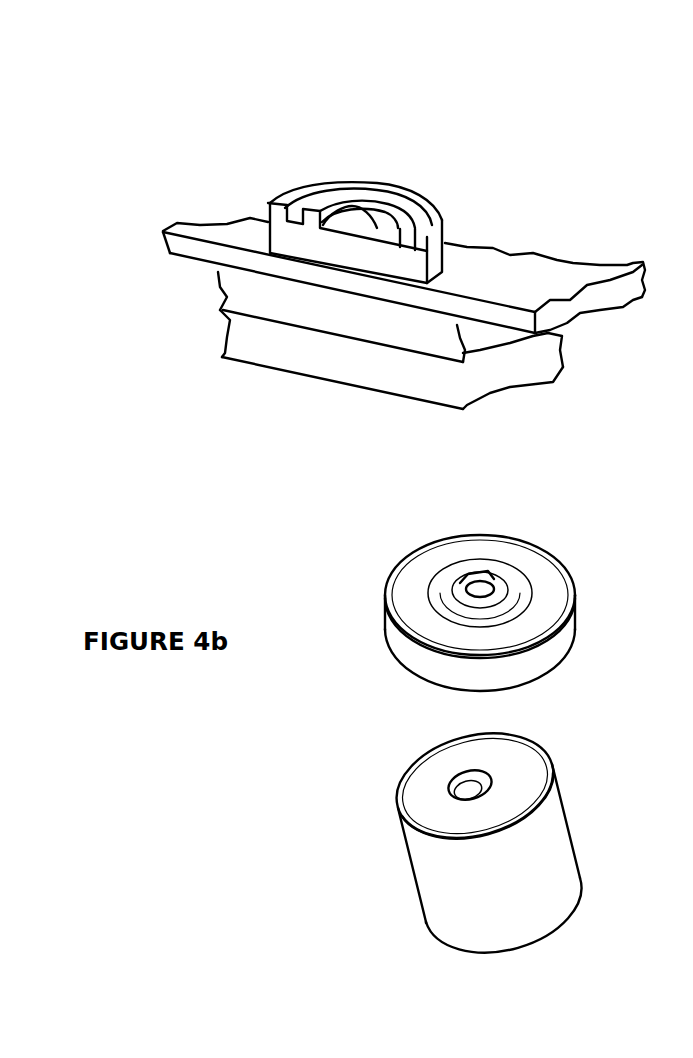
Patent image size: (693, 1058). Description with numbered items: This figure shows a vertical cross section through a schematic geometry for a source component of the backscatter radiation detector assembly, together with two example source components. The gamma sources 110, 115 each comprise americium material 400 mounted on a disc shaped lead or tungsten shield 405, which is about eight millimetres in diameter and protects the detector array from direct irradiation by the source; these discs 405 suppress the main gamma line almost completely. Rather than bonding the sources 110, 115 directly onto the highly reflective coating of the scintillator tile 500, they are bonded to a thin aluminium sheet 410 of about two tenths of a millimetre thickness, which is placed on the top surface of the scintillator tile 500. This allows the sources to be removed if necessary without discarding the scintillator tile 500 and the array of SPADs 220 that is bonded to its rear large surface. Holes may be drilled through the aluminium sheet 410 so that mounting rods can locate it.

The gamma source 110 is at (398, 896).
The americium radioisotope source component 115 is at (362, 662).
The americium material 400 is at (387, 198).
The disc shaped lead or tungsten shield 405 is at (437, 210).
The aluminium sheet 410 is at (192, 250).
The scintillator tile 500 is at (267, 308).
The SPAD array 220 is at (317, 360).